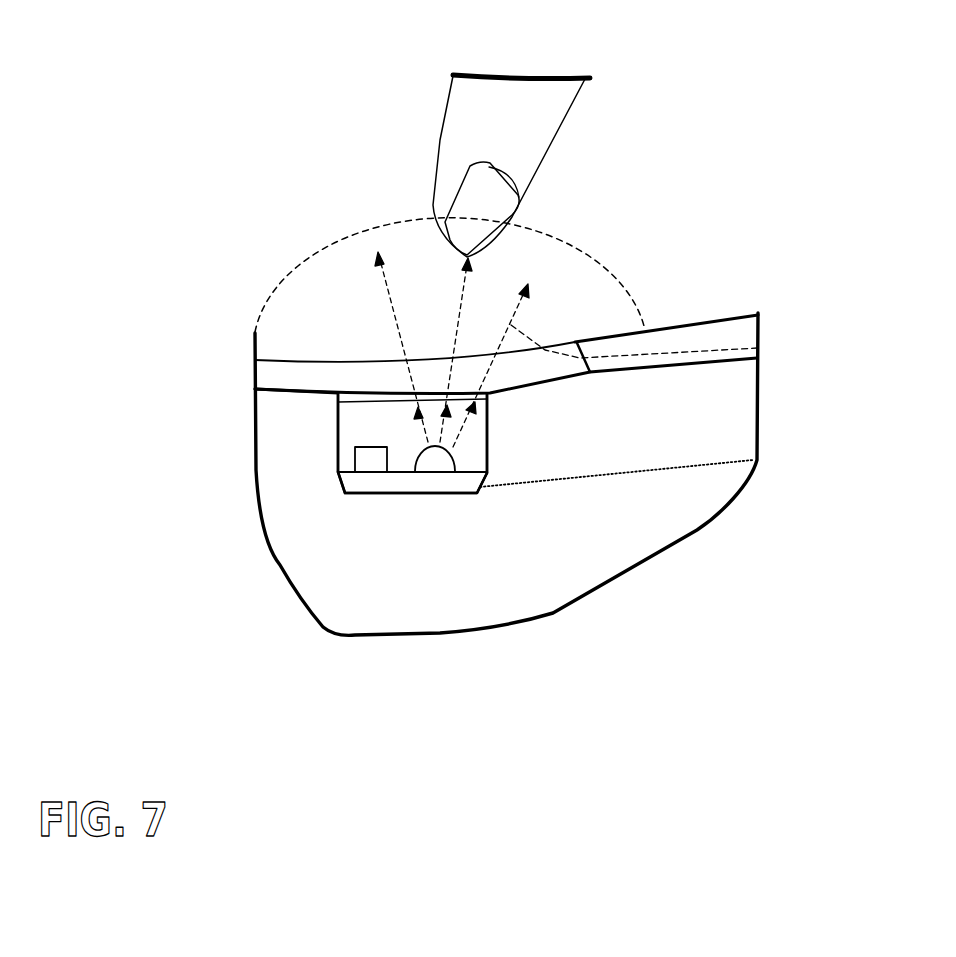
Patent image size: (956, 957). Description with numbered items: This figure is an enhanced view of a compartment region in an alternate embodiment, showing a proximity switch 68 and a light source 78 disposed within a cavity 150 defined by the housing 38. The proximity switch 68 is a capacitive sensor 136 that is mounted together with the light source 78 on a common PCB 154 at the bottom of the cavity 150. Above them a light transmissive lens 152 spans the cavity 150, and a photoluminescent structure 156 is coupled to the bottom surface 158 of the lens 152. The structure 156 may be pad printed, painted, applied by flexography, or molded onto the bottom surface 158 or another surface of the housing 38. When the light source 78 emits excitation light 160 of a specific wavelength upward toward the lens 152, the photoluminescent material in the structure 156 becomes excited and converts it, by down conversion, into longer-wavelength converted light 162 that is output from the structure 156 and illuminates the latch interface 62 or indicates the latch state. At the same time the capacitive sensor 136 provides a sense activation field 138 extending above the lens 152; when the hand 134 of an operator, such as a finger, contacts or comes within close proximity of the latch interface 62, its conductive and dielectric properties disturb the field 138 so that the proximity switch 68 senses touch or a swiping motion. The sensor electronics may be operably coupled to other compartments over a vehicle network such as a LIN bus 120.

The hand 134 is at (515, 156).
The sense activation field 138 is at (342, 232).
The latch interface 62 is at (312, 362).
The housing 38 is at (700, 342).
The converted light 162 is at (757, 348).
The light transmissive lens 152 is at (295, 380).
The photoluminescent structure 156 is at (358, 396).
The cavity 150 is at (338, 440).
The bottom surface 158 is at (493, 395).
The excitation light 160 is at (465, 427).
The capacitive sensor 136 is at (353, 455).
The proximity switch 68 is at (367, 473).
The PCB 154 is at (393, 483).
The light source 78 is at (435, 458).
The LIN bus 120 is at (643, 472).